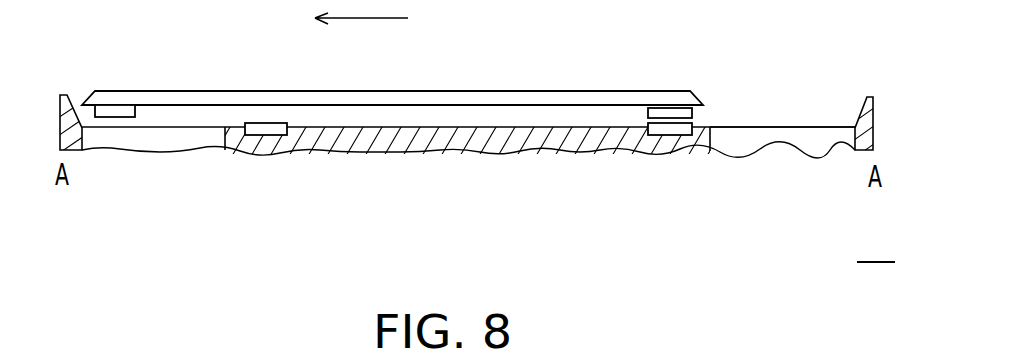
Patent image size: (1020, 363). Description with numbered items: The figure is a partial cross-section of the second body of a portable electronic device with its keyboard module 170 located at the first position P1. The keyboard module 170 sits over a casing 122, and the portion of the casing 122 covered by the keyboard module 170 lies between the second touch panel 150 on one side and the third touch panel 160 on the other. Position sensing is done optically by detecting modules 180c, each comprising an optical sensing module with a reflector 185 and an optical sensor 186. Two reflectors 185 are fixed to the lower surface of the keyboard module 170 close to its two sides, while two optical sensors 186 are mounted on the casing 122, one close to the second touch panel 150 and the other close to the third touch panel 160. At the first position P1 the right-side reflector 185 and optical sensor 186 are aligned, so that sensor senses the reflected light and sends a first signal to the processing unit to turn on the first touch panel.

The casing 122 is at (412, 142).
The second touch panel 150 is at (162, 138).
The third touch panel 160 is at (772, 140).
The keyboard module 170 is at (475, 90).
The reflector 185 is at (122, 110).
The optical sensor 186 is at (262, 130).
The detecting module 180c is at (787, 42).
The first position P1 is at (876, 243).